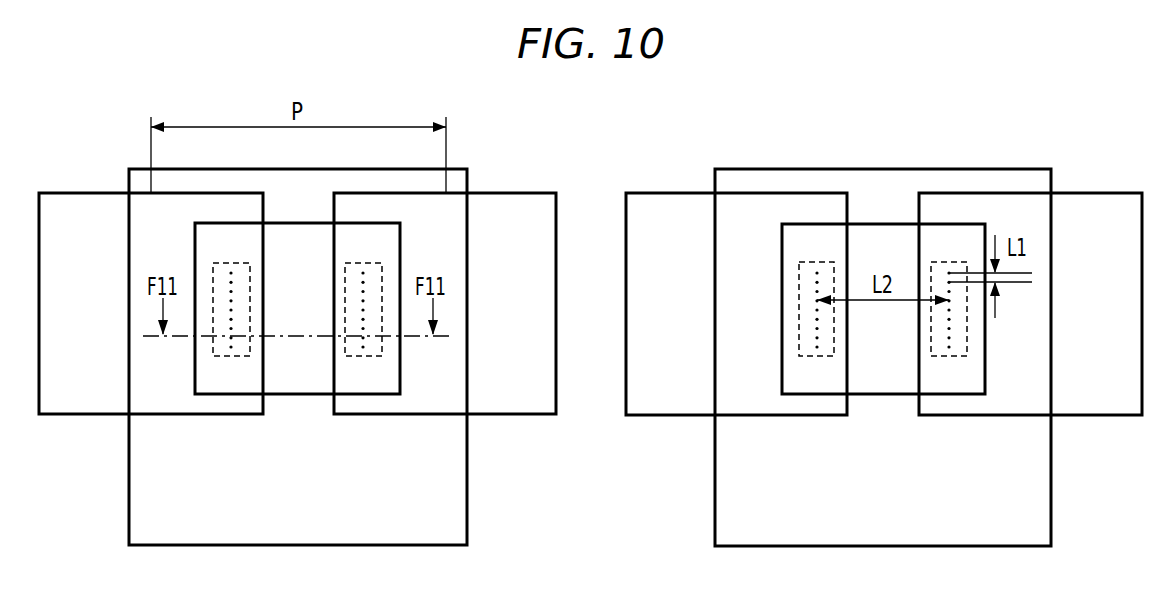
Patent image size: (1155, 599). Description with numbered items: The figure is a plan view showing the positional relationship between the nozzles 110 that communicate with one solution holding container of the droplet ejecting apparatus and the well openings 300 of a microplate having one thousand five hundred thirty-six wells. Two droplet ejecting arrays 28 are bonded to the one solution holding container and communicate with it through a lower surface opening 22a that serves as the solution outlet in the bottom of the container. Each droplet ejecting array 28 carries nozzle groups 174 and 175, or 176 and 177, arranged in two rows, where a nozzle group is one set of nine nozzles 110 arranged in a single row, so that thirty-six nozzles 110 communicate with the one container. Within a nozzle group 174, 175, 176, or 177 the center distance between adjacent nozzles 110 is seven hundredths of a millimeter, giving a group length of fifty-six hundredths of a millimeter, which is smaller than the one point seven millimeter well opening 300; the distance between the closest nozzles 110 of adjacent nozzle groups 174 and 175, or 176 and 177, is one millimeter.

The well opening 300 is at (507, 193).
The nozzle group 174 is at (231, 357).
The nozzle group 175 is at (363, 357).
The droplet ejecting array 28 is at (968, 169).
The lower surface opening 22a is at (881, 224).
The nozzle 110 is at (818, 271).
The nozzle group 176 is at (817, 357).
The nozzle group 177 is at (949, 357).